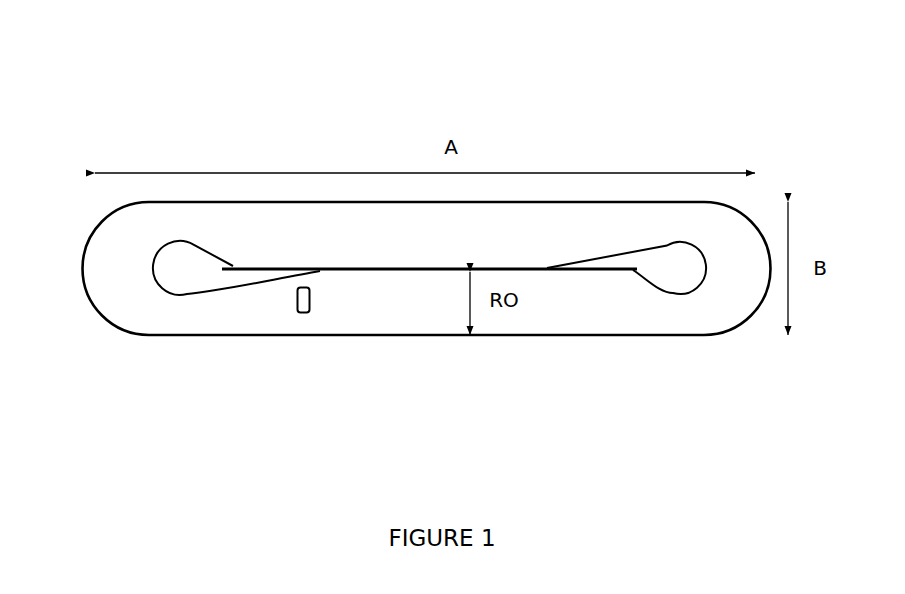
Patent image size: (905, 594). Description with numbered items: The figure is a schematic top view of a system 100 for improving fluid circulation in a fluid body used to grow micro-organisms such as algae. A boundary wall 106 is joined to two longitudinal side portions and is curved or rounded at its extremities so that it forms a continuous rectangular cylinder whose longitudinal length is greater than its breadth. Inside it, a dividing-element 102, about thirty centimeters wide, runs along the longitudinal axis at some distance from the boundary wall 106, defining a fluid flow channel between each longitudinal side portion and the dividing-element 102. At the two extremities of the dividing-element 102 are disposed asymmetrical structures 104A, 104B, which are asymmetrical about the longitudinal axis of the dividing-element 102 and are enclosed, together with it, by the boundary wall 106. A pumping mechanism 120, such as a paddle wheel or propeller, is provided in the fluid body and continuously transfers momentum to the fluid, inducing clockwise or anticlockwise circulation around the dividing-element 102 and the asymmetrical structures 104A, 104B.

The system 100 is at (647, 99).
The dividing-element 102 is at (398, 272).
The asymmetrical structure 104A is at (186, 277).
The asymmetrical structure 104B is at (674, 277).
The boundary wall 106 is at (85, 253).
The pumping mechanism 120 is at (303, 320).